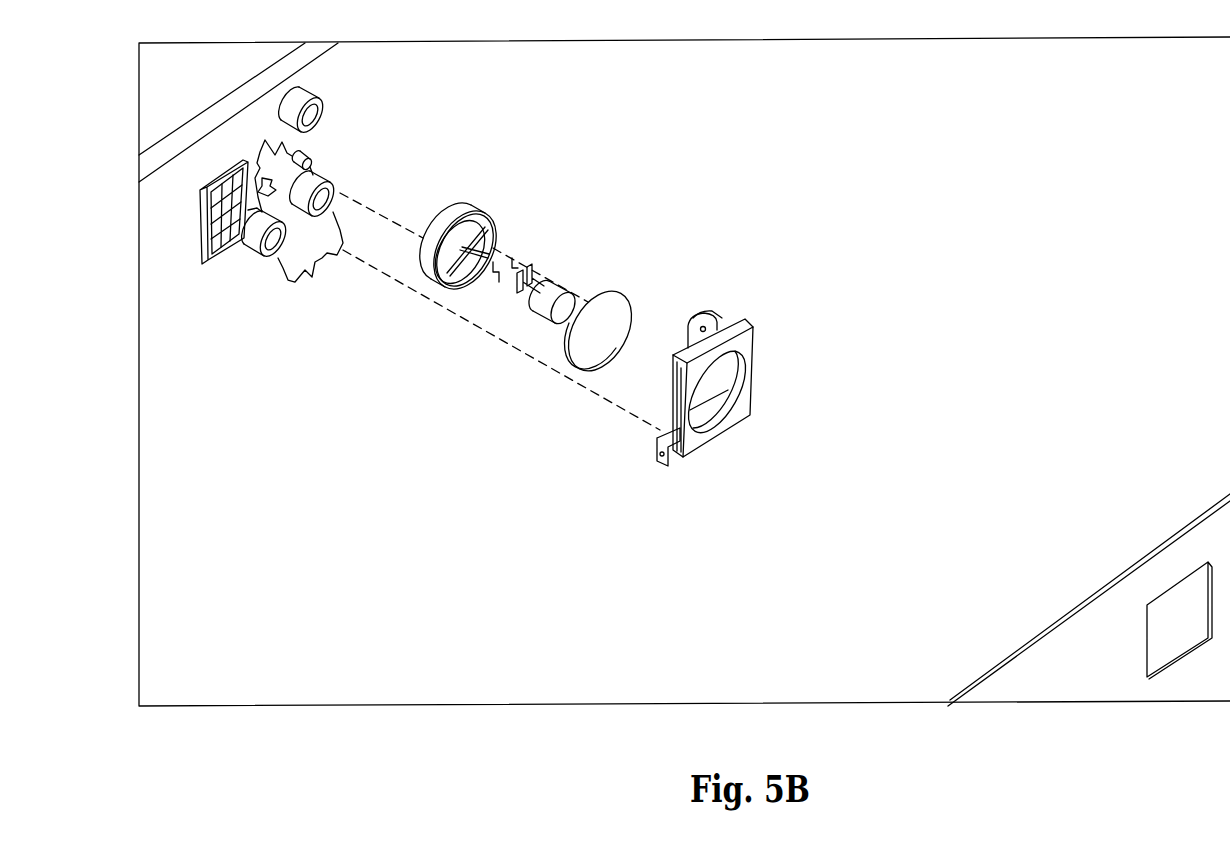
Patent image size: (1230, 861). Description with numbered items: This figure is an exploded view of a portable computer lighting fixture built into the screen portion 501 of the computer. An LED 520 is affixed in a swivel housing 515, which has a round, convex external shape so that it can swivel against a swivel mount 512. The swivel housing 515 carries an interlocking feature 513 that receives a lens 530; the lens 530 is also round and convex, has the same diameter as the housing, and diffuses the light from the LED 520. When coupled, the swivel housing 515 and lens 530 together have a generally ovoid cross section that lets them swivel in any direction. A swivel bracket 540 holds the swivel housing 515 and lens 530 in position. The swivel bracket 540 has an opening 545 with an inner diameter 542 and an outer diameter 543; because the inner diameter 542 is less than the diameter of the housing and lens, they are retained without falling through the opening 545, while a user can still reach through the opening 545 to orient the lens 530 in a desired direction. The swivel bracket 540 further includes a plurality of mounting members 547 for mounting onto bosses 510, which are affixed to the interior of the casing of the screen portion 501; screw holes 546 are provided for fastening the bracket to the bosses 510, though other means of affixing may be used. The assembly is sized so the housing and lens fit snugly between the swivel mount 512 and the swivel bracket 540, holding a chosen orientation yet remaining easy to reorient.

The screen portion 501 is at (1090, 628).
The bosses 510 is at (314, 277).
The swivel mount 512 is at (268, 150).
The interlocking feature 513 is at (497, 226).
The swivel housing 515 is at (462, 210).
The LED 520 is at (554, 300).
The lens 530 is at (622, 320).
The swivel bracket 540 is at (745, 347).
The inner diameter 542 is at (730, 390).
The outer diameter 543 is at (712, 430).
The opening 545 is at (725, 380).
The screw holes 546 is at (755, 327).
The mounting members 547 is at (710, 316).